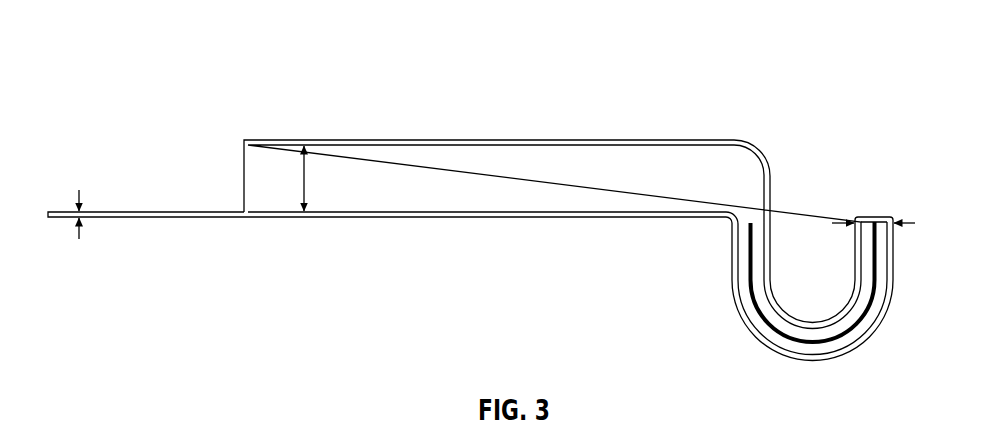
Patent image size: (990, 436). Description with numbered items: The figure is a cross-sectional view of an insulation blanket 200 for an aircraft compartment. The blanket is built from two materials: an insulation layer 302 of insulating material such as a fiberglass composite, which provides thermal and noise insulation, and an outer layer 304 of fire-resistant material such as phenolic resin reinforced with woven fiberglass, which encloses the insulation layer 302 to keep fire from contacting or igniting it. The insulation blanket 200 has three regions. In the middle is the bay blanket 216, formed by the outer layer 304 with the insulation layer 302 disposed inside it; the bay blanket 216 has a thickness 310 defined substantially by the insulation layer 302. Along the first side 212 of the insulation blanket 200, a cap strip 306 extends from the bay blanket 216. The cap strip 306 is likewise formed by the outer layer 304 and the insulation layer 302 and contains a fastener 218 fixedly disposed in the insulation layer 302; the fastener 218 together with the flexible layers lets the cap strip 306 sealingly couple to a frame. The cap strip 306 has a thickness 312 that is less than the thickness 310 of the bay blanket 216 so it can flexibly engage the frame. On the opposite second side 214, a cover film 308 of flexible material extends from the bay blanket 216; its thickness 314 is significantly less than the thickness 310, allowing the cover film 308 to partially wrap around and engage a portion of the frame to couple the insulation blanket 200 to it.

The insulation blanket 200 is at (126, 66).
The first side 212 is at (864, 131).
The second side 214 is at (153, 181).
The bay blanket 216 is at (586, 110).
The fastener 218 is at (822, 342).
The insulation layer 302 is at (373, 153).
The outer layer 304 is at (460, 138).
The cap strip 306 is at (889, 185).
The cover film 308 is at (177, 218).
The thickness of the bay blanket 310 is at (305, 177).
The thickness of the cap strip 312 is at (903, 225).
The thickness of the cover film 314 is at (78, 236).